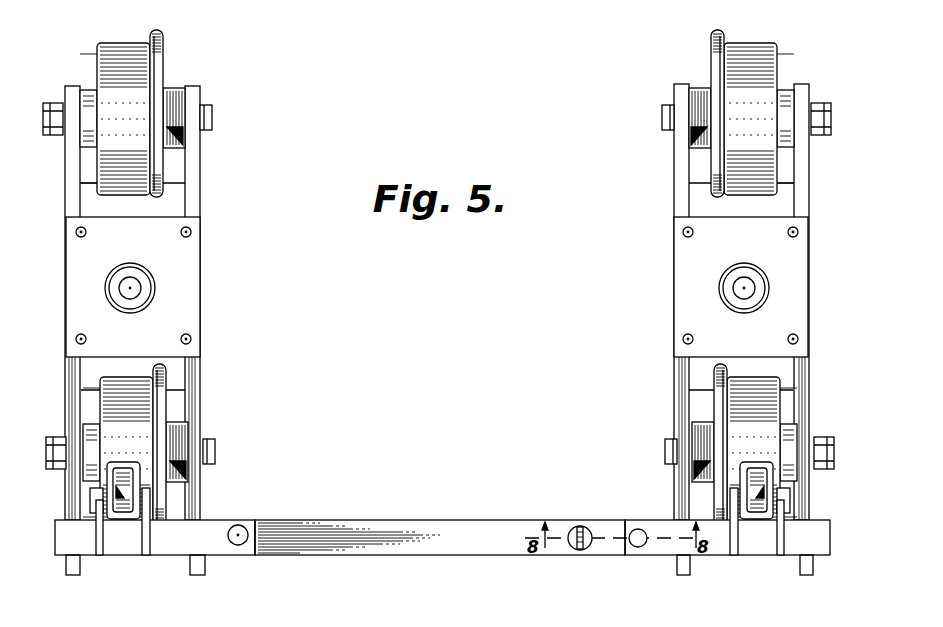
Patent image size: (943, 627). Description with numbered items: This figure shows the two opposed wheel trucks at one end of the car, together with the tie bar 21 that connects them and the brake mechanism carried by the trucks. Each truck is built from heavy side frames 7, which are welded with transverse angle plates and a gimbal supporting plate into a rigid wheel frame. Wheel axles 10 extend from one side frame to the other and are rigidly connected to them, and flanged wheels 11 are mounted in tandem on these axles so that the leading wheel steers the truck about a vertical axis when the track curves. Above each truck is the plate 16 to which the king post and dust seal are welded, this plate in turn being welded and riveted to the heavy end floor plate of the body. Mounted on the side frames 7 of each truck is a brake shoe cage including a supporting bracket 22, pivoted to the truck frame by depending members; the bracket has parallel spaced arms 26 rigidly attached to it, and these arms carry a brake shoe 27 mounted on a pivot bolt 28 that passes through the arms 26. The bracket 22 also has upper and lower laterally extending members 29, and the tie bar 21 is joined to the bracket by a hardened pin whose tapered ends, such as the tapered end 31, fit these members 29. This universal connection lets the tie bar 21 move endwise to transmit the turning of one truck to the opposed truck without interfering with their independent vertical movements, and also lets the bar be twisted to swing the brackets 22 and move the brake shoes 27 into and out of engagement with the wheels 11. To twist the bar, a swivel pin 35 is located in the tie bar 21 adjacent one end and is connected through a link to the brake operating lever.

The side frame 7 is at (68, 378).
The wheel axle 10 is at (46, 104).
The flanged wheel 11 is at (97, 43).
The plate 16 is at (192, 259).
The tie bar 21 is at (457, 522).
The supporting bracket 22 is at (218, 547).
The arm 26 is at (102, 548).
The brake shoe 27 is at (127, 478).
The pivot bolt 28 is at (134, 508).
The laterally extending member 29 is at (262, 545).
The tapered end 31 is at (262, 522).
The swivel pin 35 is at (580, 551).